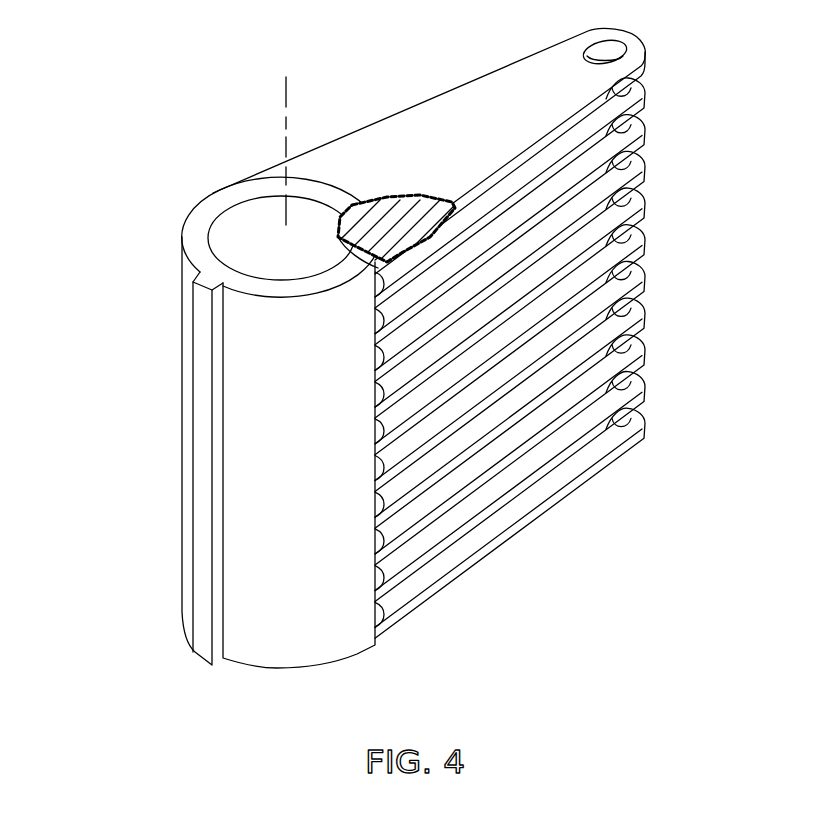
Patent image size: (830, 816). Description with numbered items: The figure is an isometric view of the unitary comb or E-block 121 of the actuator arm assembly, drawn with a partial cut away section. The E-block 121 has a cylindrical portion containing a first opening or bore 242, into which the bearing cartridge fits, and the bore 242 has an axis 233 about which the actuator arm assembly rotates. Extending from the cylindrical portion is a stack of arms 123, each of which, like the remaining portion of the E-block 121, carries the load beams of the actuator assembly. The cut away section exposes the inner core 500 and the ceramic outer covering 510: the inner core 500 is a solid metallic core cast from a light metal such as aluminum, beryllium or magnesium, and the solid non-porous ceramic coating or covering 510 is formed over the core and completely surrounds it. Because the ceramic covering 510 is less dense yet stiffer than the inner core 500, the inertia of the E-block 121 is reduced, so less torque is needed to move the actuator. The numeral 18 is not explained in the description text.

The heat pipe assembly 18 is at (443, 365).
The unitary comb or E-block 121 is at (362, 603).
The arm 123 is at (492, 87).
The bore 242 is at (253, 222).
The axis 233 is at (283, 98).
The inner core 500 is at (420, 193).
The ceramic outer covering 510 is at (363, 207).